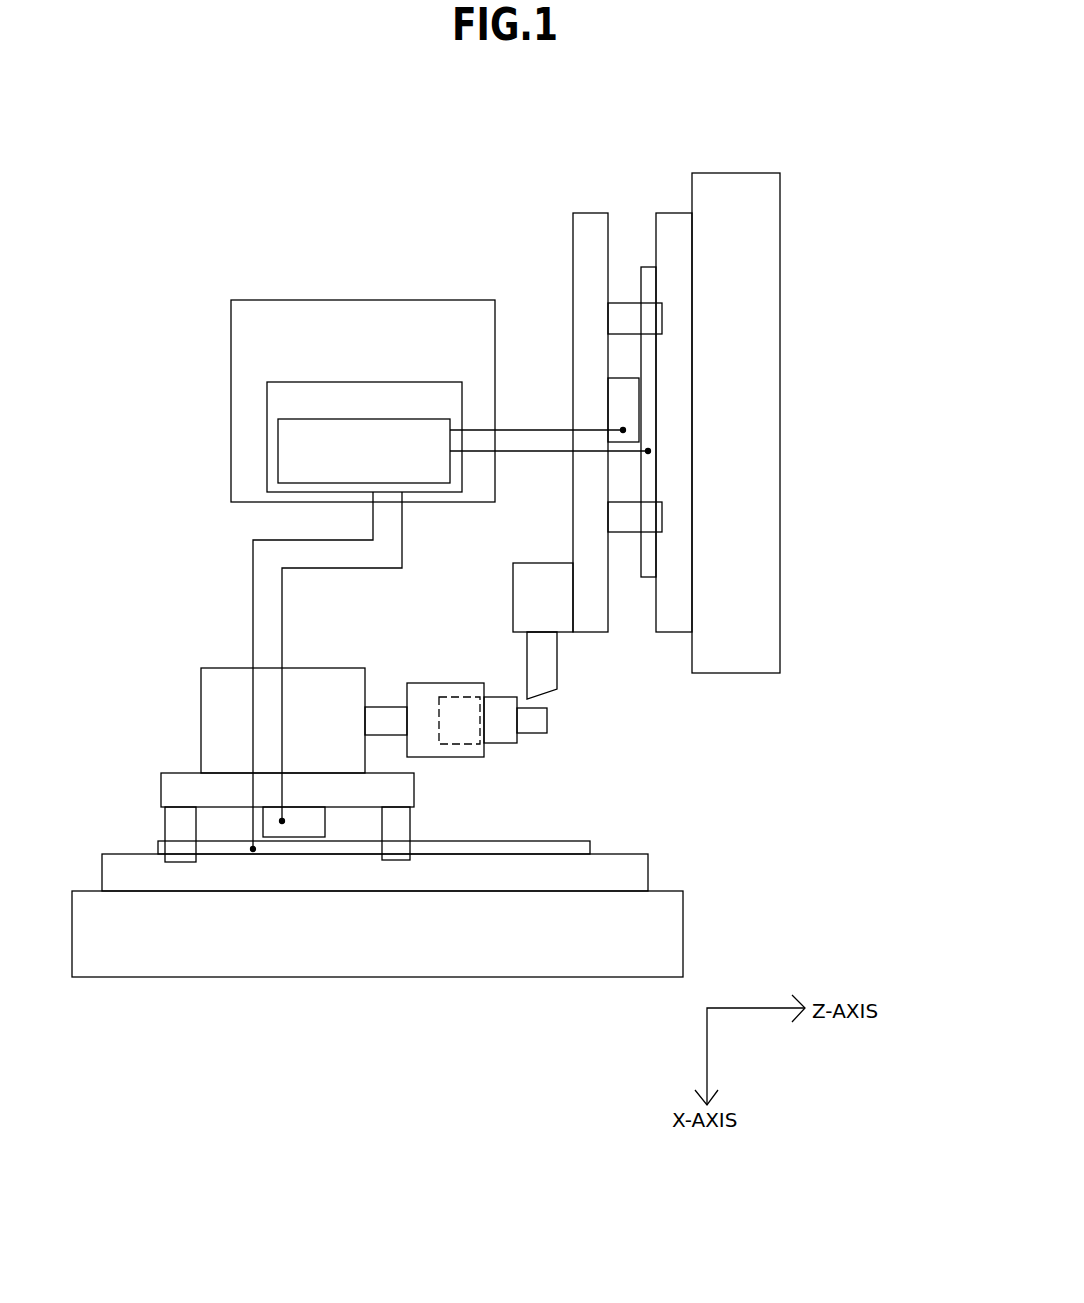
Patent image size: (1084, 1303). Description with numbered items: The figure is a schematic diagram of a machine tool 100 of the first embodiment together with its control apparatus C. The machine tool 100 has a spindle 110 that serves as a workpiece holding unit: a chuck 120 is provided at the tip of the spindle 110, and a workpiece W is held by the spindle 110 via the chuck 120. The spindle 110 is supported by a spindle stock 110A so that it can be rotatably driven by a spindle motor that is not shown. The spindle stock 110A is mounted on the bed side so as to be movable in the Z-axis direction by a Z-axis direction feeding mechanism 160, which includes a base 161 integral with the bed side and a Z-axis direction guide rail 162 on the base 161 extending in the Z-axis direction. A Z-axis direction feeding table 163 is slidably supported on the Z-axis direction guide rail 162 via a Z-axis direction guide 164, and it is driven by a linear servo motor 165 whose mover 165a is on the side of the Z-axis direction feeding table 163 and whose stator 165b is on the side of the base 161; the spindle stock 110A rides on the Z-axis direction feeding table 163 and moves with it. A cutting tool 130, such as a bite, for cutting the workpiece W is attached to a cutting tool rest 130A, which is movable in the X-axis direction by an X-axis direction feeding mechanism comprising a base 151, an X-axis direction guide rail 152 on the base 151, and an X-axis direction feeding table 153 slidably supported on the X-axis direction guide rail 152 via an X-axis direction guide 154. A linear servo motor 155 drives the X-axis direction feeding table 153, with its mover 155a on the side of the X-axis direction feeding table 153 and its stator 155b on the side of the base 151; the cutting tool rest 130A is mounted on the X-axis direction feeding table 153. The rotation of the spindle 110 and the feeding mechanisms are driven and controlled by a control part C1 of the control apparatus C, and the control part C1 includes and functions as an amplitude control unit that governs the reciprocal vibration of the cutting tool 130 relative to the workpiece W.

The machine tool 100 is at (232, 212).
The control apparatus C is at (352, 297).
The control part C1 is at (353, 378).
The spindle 110 is at (387, 717).
The spindle stock 110A is at (223, 700).
The chuck 120 is at (445, 688).
The cutting tool 130 is at (540, 673).
The cutting tool rest 130A is at (540, 582).
The base 151 is at (757, 185).
The X-axis direction guide rail 152 is at (672, 227).
The X-axis direction feeding table 153 is at (585, 290).
The X-axis direction guide 154 is at (628, 315).
The linear servo motor 155 is at (857, 228).
The mover 155a is at (625, 389).
The stator 155b is at (648, 415).
The Z-axis direction feeding mechanism 160 is at (141, 1042).
The base 161 is at (523, 948).
The Z-axis direction guide rail 162 is at (637, 875).
The Z-axis direction feeding table 163 is at (188, 782).
The Z-axis direction guide 164 is at (183, 831).
The linear servo motor 165 is at (472, 1022).
The mover 165a is at (305, 822).
The stator 165b is at (357, 848).
The workpiece W is at (533, 718).